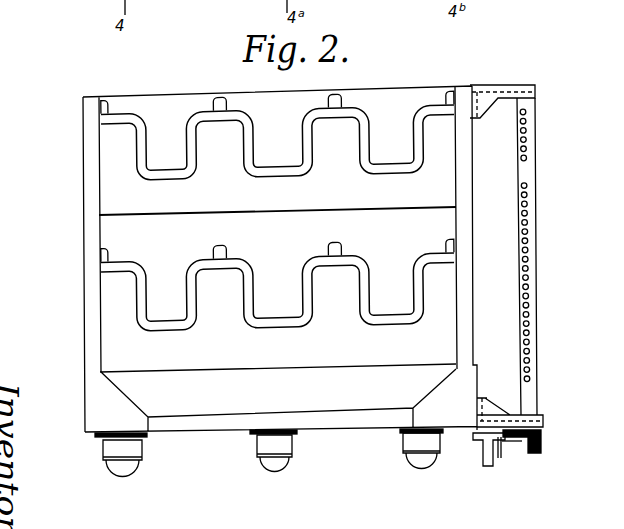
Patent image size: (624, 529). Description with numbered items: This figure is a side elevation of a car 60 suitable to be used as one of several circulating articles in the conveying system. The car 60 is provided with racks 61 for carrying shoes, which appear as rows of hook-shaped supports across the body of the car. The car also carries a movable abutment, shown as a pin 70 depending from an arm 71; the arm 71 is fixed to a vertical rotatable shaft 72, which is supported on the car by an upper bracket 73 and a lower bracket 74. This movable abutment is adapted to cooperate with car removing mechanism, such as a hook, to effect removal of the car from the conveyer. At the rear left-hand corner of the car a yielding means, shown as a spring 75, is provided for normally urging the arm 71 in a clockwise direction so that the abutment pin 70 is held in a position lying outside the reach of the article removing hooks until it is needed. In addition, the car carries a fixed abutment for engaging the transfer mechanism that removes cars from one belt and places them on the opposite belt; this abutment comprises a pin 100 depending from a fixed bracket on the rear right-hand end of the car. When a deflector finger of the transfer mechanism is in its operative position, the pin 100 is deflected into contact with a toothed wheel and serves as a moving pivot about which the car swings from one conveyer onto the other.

The car 60 is at (86, 186).
The rack 61 is at (258, 158).
The pin 70 is at (482, 461).
The arm 71 is at (500, 440).
The vertical rotatable shaft 72 is at (529, 174).
The bracket 73 is at (496, 85).
The bracket 74 is at (487, 414).
The spring 75 is at (515, 444).
The pin 100 is at (540, 450).